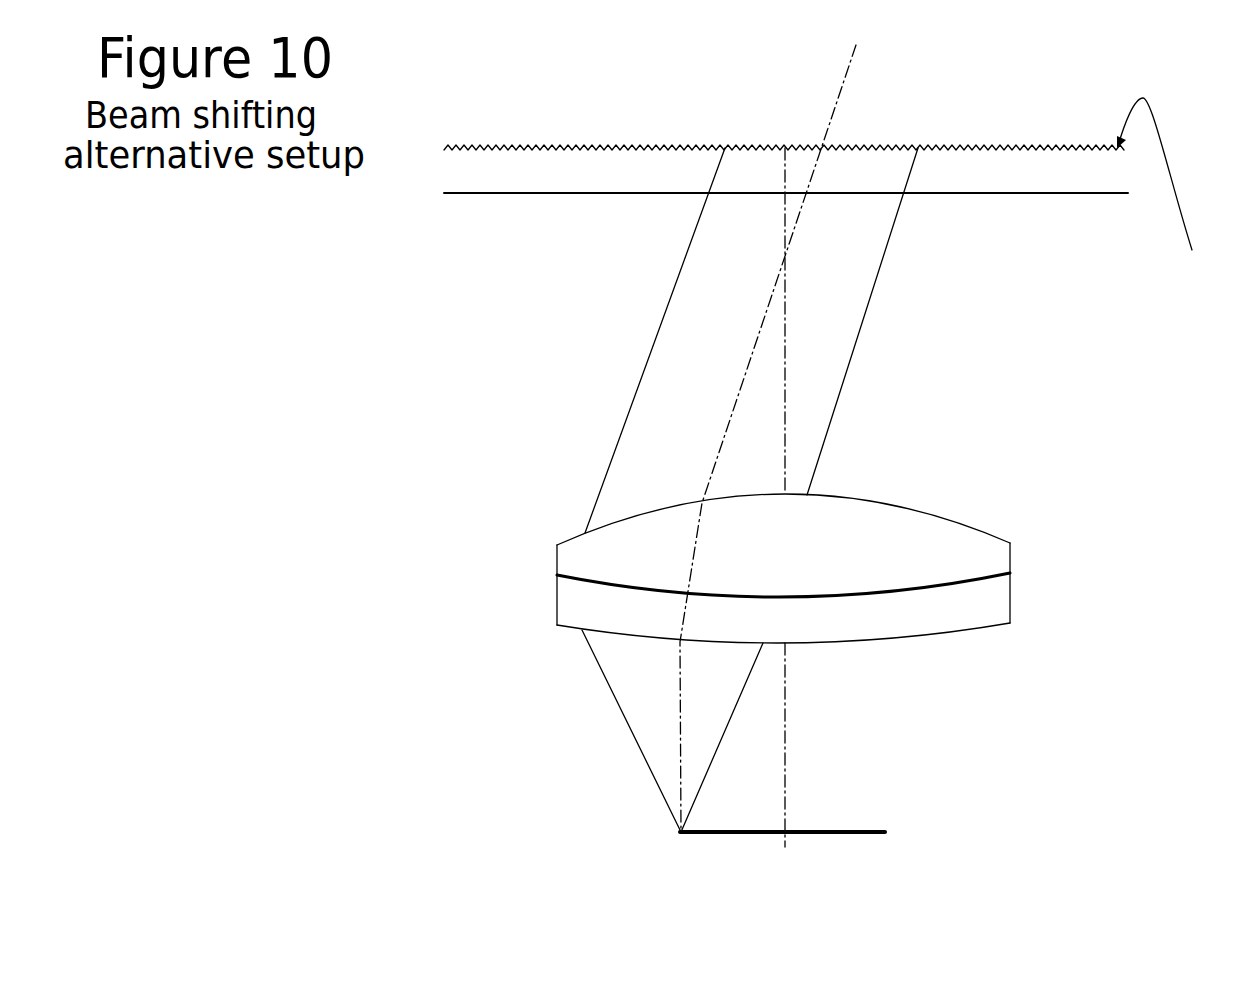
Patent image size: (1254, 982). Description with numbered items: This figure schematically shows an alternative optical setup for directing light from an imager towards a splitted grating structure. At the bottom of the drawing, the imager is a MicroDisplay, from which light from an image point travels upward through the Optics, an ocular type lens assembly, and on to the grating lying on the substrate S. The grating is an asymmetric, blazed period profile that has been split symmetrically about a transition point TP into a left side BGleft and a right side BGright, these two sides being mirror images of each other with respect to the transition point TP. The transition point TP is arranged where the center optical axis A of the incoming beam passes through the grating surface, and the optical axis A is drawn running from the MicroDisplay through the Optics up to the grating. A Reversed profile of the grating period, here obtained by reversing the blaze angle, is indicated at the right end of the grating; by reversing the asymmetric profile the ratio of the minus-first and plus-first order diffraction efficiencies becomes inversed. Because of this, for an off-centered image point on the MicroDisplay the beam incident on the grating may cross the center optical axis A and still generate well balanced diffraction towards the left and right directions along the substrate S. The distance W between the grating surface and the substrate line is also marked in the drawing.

The substrate S is at (786, 175).
The working distance W is at (744, 235).
The left side of the grating BGleft is at (688, 147).
The right side of the grating BGright is at (1060, 146).
The transition point TP is at (783, 146).
The reversed asymmetric grating period profile Reversed profile is at (1116, 196).
The ocular type optics Optics is at (850, 568).
The optical axis A is at (795, 716).
The microdisplay chip MicroDisplay is at (883, 828).